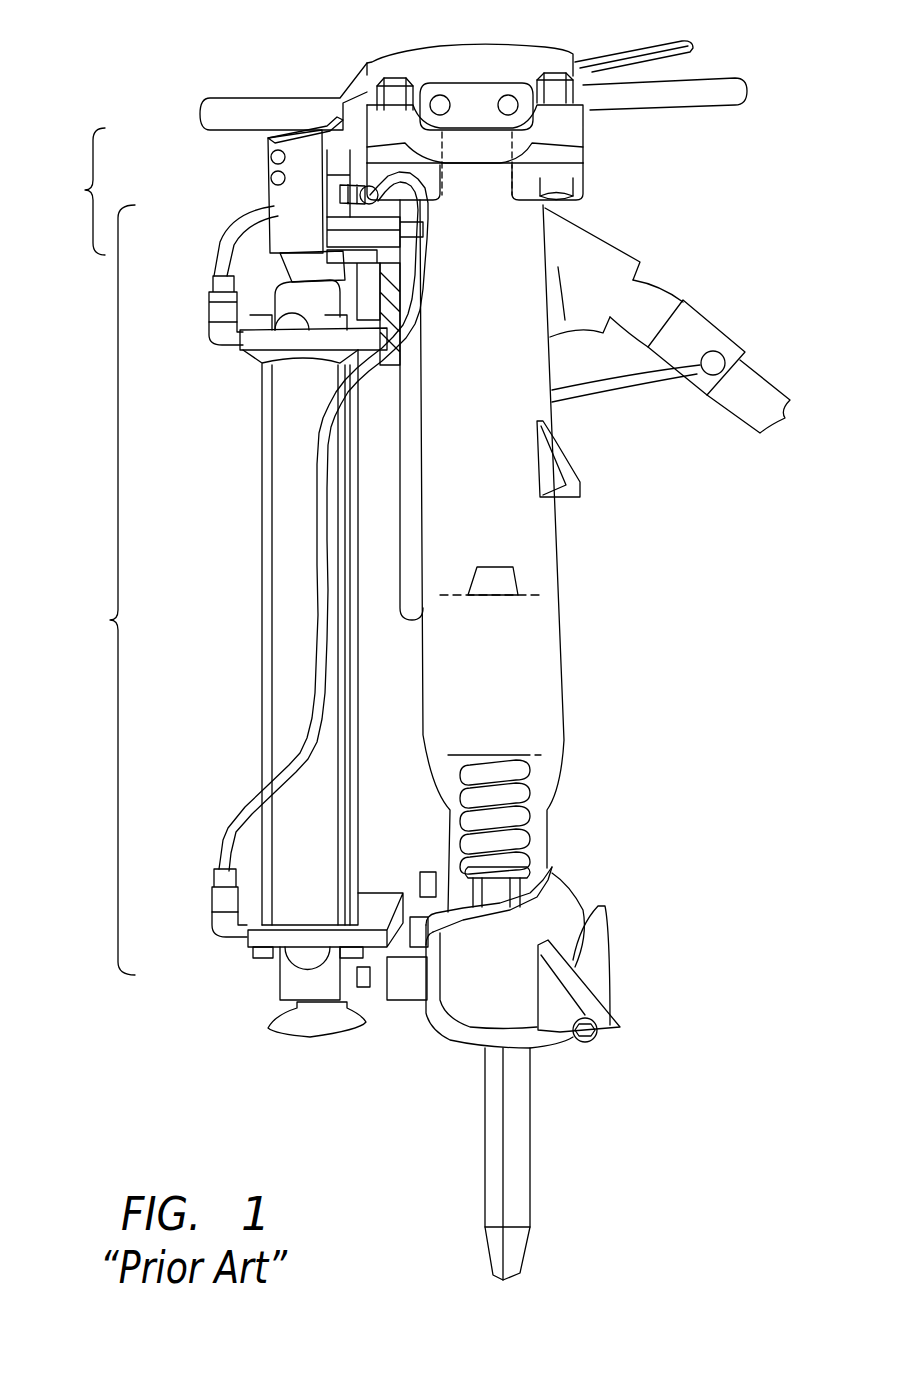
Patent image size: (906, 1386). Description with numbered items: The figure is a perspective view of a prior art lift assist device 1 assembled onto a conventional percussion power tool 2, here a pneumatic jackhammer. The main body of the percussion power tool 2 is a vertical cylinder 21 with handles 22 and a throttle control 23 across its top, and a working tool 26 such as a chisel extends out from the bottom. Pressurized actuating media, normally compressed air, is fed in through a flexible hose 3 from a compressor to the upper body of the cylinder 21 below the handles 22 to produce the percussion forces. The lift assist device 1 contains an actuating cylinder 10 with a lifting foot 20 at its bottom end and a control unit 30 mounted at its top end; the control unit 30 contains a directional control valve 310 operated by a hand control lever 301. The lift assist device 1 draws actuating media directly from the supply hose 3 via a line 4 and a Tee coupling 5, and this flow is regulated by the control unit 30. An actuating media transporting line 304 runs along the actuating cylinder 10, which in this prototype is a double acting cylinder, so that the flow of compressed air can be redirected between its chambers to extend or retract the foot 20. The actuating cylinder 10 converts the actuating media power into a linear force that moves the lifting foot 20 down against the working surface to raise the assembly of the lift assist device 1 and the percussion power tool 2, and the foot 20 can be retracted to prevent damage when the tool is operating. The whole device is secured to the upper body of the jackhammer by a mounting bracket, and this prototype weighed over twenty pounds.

The lift assist device 1 is at (108, 620).
The percussion power tool 2 is at (528, 632).
The flexible hose 3 is at (763, 374).
The line 4 is at (627, 397).
The Tee coupling 5 is at (713, 322).
The actuating cylinder 10 is at (260, 570).
The lifting foot 20 is at (282, 1016).
The vertical cylinder 21 is at (583, 503).
The handles 22 is at (200, 112).
The throttle control 23 is at (643, 50).
The working tool 26 is at (530, 1135).
The control unit 30 is at (214, 239).
The hand control lever 301 is at (297, 128).
The actuating media transporting line 304 is at (316, 460).
The directional control valve 310 is at (268, 145).